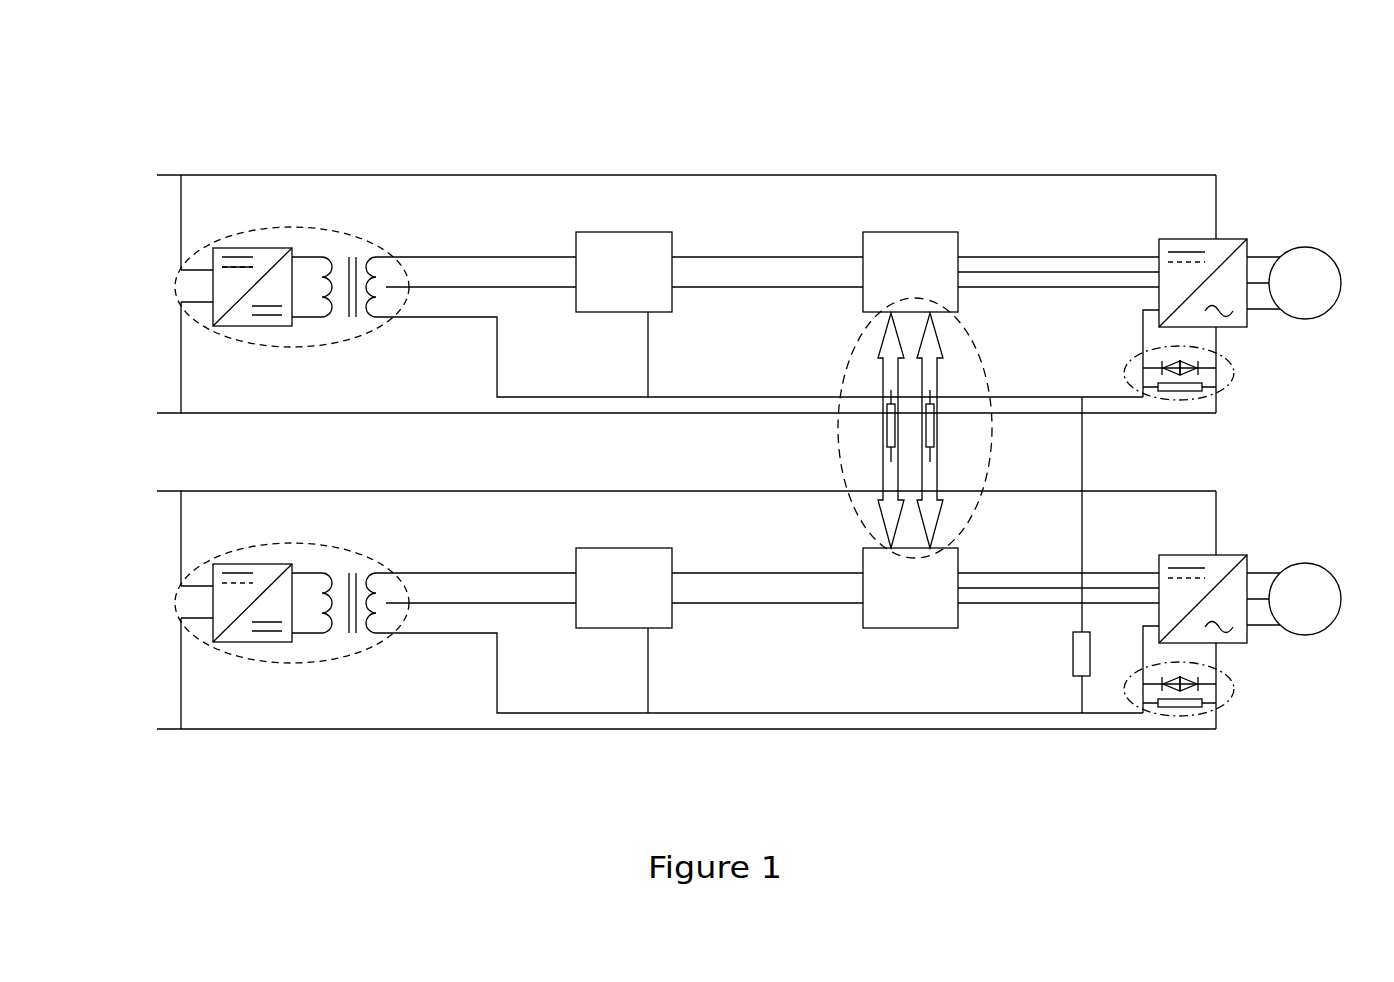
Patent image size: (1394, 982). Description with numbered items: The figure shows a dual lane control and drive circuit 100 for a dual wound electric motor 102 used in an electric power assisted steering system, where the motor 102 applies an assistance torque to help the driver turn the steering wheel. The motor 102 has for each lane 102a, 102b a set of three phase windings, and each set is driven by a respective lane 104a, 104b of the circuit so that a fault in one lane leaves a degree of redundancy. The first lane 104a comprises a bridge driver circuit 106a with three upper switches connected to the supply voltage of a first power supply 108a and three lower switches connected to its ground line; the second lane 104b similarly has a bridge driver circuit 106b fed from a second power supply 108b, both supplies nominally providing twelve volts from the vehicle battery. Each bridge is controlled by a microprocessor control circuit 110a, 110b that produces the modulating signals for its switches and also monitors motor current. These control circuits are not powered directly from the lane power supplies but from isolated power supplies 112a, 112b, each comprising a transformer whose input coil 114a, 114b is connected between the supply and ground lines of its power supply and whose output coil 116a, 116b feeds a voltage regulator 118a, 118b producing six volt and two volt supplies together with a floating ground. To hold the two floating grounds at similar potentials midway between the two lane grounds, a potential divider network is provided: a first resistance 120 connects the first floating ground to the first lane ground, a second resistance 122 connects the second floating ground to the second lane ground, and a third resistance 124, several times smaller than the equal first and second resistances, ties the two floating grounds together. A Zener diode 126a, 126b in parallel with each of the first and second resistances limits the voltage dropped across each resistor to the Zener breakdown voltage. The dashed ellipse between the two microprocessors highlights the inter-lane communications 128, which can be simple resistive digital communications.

The dual lane control and drive circuit 100 is at (1170, 128).
The dual wound electric motor 102 is at (1305, 320).
The first lane of the motor 102a is at (1300, 247).
The second lane of the motor 102b is at (1305, 636).
The first lane 104a is at (440, 164).
The second lane 104b is at (436, 742).
The first bridge driver circuit 106a is at (1220, 239).
The second bridge driver circuit 106b is at (1233, 644).
The first power supply 108a is at (157, 170).
The second power supply 108b is at (157, 486).
The first control circuit 110a is at (907, 231).
The second control circuit 110b is at (907, 629).
The first isolated power supply 112a is at (253, 231).
The second isolated power supply 112b is at (252, 660).
The input coil 114a is at (309, 252).
The input coil 114b is at (310, 638).
The output coil 116a is at (378, 250).
The output coil 116b is at (377, 640).
The first voltage regulator 118a is at (620, 231).
The second voltage regulator 118b is at (620, 629).
The first resistance 120 is at (1162, 392).
The second resistance 122 is at (1160, 708).
The third resistance 124 is at (1078, 678).
The Zener diode 126a is at (1181, 374).
The Zener diode 126b is at (1186, 691).
The inter-lane communications 128 is at (992, 453).